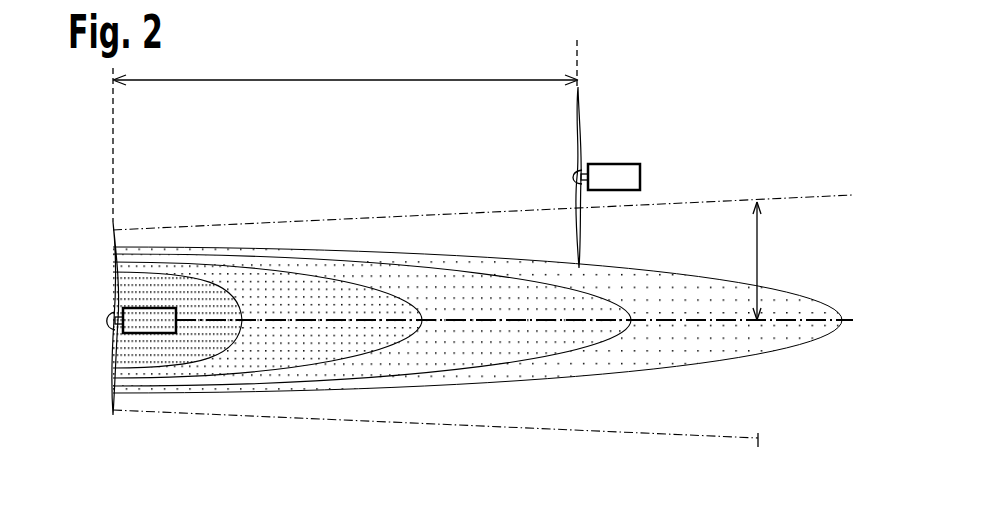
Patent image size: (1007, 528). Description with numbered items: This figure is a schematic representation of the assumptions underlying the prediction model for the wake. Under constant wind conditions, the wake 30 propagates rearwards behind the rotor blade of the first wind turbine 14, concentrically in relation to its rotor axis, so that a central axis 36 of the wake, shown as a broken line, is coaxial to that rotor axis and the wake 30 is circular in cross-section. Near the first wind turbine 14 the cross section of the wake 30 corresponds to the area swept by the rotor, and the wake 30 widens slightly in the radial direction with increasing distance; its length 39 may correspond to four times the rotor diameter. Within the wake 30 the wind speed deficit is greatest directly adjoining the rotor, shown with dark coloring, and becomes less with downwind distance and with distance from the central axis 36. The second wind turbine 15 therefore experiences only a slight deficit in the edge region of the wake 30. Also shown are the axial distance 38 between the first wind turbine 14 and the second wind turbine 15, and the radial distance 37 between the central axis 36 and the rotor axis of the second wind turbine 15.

The first wind turbine 14 is at (111, 275).
The second wind turbine 15 is at (616, 163).
The wake 30 is at (426, 287).
The central axis 36 is at (660, 325).
The radial distance 37 is at (758, 257).
The axial distance 38 is at (335, 77).
The length 39 is at (482, 430).